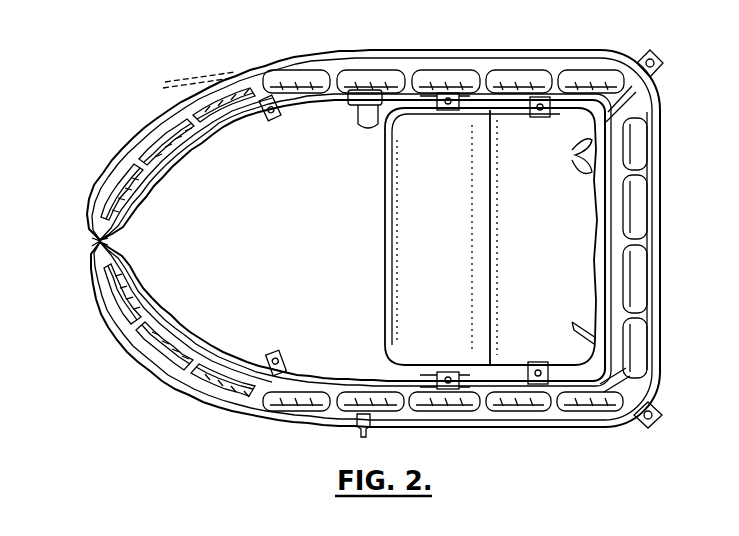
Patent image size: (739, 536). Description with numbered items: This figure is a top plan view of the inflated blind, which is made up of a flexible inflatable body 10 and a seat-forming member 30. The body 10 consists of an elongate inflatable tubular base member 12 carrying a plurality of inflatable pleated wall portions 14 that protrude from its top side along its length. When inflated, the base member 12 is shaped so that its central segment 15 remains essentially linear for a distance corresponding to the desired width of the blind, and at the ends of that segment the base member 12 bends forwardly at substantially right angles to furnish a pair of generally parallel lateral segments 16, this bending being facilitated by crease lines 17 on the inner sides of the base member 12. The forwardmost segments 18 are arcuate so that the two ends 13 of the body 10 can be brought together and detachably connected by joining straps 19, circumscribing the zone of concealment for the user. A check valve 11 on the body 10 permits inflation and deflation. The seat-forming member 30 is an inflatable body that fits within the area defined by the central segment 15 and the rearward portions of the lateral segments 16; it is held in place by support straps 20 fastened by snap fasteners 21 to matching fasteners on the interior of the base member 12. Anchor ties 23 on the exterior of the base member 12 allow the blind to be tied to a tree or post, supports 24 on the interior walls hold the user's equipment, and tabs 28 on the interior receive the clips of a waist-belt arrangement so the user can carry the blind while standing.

The flexible inflatable body 10 is at (122, 118).
The check valve 11 is at (357, 428).
The inflatable tubular base member 12 is at (254, 419).
The ends 13 is at (128, 235).
The inflatable pleated wall portions 14 is at (360, 78).
The central segment 15 is at (643, 293).
The lateral segments 16 is at (530, 64).
The crease lines 17 is at (623, 100).
The forwardmost segments 18 is at (150, 127).
The joining straps 19 is at (93, 241).
The support straps 20 is at (433, 112).
The snap fasteners 21 is at (447, 110).
The anchor ties 23 is at (648, 46).
The supports 24 is at (365, 126).
The tabs 28 is at (268, 120).
The seat-forming member 30 is at (385, 237).